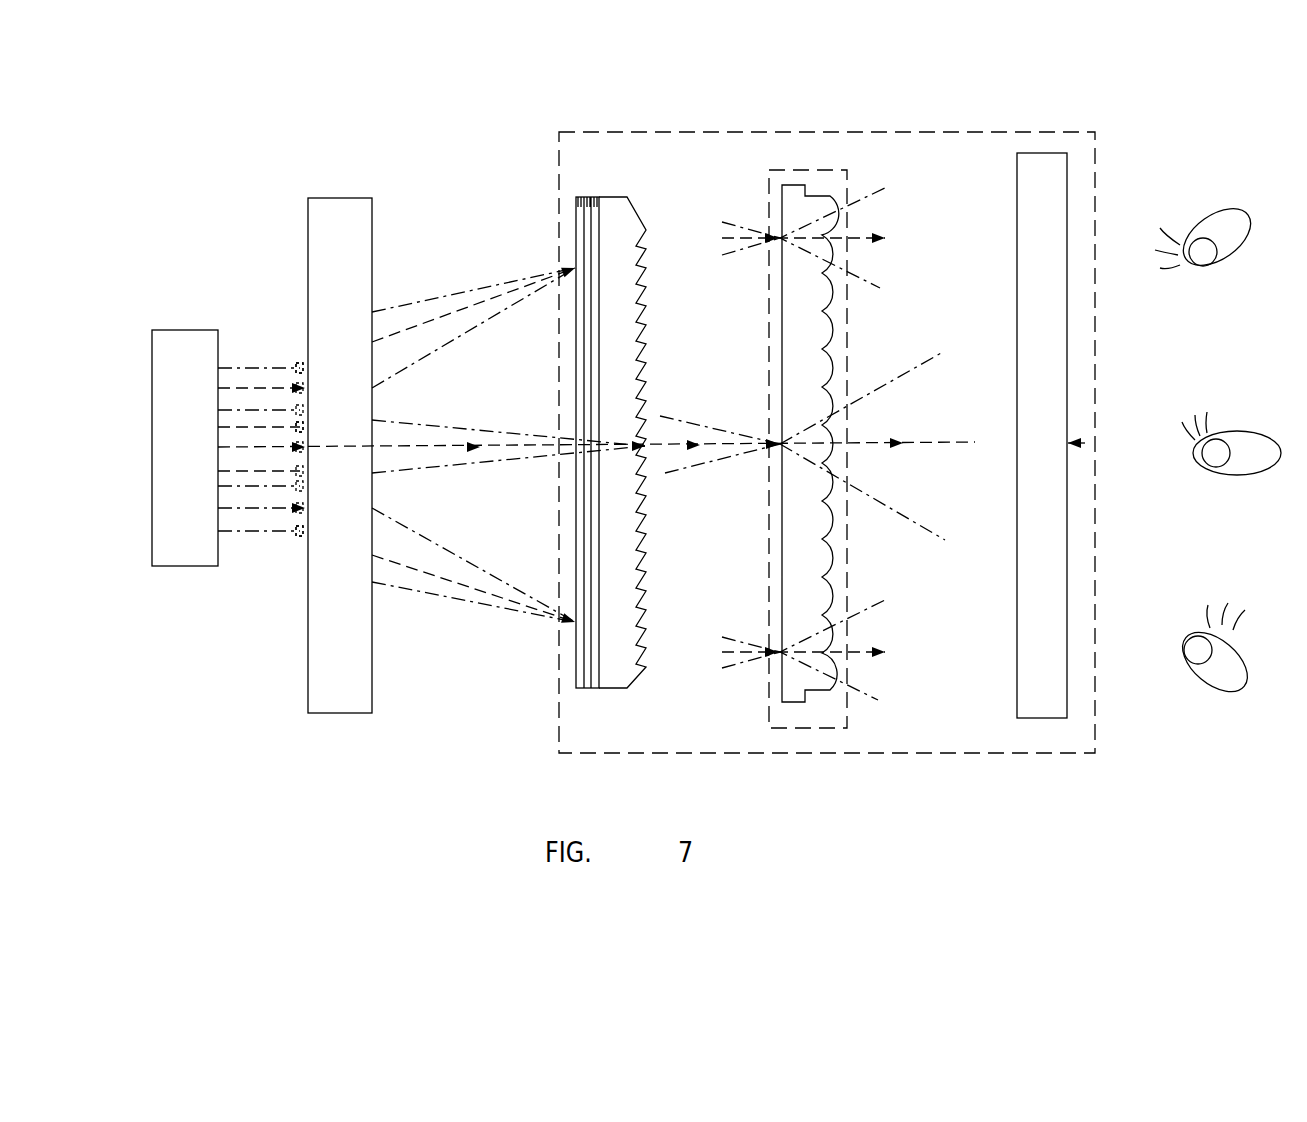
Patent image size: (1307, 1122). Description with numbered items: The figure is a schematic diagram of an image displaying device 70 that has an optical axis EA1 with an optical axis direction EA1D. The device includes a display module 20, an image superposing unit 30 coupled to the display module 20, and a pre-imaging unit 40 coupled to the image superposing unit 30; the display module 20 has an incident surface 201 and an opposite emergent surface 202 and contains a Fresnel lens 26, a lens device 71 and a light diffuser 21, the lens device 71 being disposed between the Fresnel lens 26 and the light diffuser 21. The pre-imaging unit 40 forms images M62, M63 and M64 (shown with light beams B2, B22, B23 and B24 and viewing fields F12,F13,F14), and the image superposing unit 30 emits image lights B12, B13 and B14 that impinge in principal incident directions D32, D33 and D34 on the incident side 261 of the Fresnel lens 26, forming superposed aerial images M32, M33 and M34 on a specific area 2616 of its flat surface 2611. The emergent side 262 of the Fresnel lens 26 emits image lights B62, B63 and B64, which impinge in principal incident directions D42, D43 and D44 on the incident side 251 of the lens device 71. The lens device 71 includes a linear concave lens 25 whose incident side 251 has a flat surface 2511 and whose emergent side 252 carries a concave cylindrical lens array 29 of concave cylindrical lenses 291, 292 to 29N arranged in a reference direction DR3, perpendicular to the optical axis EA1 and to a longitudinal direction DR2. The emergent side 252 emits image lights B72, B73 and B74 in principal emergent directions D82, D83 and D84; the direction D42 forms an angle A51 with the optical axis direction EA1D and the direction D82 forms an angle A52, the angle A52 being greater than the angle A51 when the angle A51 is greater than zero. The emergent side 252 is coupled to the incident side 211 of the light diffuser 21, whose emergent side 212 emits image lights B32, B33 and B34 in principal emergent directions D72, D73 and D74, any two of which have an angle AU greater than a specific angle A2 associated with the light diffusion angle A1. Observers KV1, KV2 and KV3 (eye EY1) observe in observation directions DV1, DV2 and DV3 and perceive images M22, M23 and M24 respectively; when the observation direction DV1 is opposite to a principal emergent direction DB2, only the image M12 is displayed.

The pre-imaging unit 40 is at (152, 450).
The image superposing unit 30 is at (340, 198).
The image displaying device 70 is at (420, 155).
The display module 20 is at (930, 132).
The light diffuser 21 is at (1053, 677).
The incident side of light diffuser 211 is at (1015, 248).
The emergent side of light diffuser 212 is at (1067, 170).
The emergent surface 202 is at (1075, 220).
The linear concave lens 25 is at (794, 702).
The incident side 251 is at (782, 630).
The flat surface 2511 is at (830, 715).
The emergent side 252 is at (837, 680).
The concave cylindrical lens array 29 is at (808, 694).
The concave cylindrical lens 29N is at (823, 550).
The concave cylindrical lens 291 is at (822, 316).
The concave cylindrical lens 292 is at (822, 347).
The Fresnel lens 26 is at (633, 673).
The incident side of Fresnel lens 261 is at (572, 260).
The emergent side of Fresnel lens 262 is at (638, 234).
The flat surface of Fresnel lens 2611 is at (599, 628).
The specific area 2616 is at (586, 577).
The incident surface 201 is at (586, 667).
The lens device 71 is at (768, 210).
The light beam B2 is at (296, 345).
The light beam B22 is at (257, 368).
The light beam B23 is at (263, 450).
The light beam B24 is at (278, 508).
The image light B12 is at (492, 431).
The image light B13 is at (527, 446).
The image light B14 is at (513, 460).
The image light B62 is at (743, 436).
The image light B63 is at (752, 455).
The image light B64 is at (735, 456).
The image light B72 is at (870, 540).
The image light B73 is at (843, 462).
The image light B74 is at (882, 397).
The image light B32 is at (1072, 540).
The image light B33 is at (1070, 438).
The image light B34 is at (1068, 366).
The image M62 is at (297, 375).
The image M63 is at (297, 428).
The image M64 is at (297, 528).
The aerial image M32 is at (590, 197).
The aerial image M33 is at (581, 197).
The aerial image M34 is at (577, 197).
The image M12 is at (1075, 252).
The image M22 is at (1075, 585).
The image M23 is at (1075, 408).
The image M24 is at (1075, 323).
The principal incident direction D32 is at (480, 416).
The principal incident direction D33 is at (480, 438).
The principal incident direction D34 is at (480, 475).
The principal incident direction D42 is at (698, 418).
The principal incident direction D43 is at (693, 440).
The principal incident direction D44 is at (695, 468).
The principal emergent direction D72 is at (1072, 532).
The principal emergent direction D73 is at (1072, 443).
The principal emergent direction D74 is at (1070, 353).
The principal emergent direction D82 is at (938, 545).
The principal emergent direction D83 is at (968, 438).
The principal emergent direction D84 is at (945, 348).
The angle A51 is at (672, 443).
The angle A52 is at (950, 437).
The optical axis EA1 is at (830, 440).
The optical axis direction EA1D is at (858, 446).
The longitudinal direction DR2 is at (832, 155).
The reference direction DR3 is at (1068, 763).
The observation direction DV1 is at (1130, 630).
The observation direction DV2 is at (1143, 425).
The observation direction DV3 is at (1133, 277).
The light diffusion angle A1 is at (1226, 330).
The specific angle A2 is at (1226, 298).
The angle AU is at (1226, 358).
The principal emergent direction DB2 is at (1228, 518).
The observer KV1 is at (1225, 667).
The observer KV2 is at (1231, 439).
The observer KV3 is at (1215, 220).
The pupil EY1 is at (1197, 652).
The viewing fields F12,F13,F14 is at (221, 735).